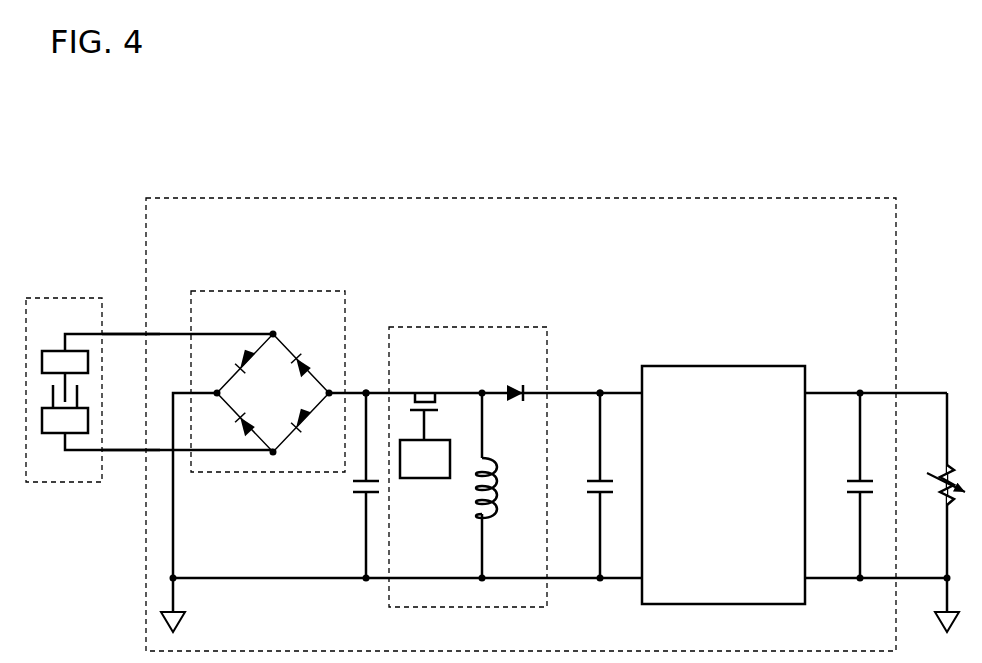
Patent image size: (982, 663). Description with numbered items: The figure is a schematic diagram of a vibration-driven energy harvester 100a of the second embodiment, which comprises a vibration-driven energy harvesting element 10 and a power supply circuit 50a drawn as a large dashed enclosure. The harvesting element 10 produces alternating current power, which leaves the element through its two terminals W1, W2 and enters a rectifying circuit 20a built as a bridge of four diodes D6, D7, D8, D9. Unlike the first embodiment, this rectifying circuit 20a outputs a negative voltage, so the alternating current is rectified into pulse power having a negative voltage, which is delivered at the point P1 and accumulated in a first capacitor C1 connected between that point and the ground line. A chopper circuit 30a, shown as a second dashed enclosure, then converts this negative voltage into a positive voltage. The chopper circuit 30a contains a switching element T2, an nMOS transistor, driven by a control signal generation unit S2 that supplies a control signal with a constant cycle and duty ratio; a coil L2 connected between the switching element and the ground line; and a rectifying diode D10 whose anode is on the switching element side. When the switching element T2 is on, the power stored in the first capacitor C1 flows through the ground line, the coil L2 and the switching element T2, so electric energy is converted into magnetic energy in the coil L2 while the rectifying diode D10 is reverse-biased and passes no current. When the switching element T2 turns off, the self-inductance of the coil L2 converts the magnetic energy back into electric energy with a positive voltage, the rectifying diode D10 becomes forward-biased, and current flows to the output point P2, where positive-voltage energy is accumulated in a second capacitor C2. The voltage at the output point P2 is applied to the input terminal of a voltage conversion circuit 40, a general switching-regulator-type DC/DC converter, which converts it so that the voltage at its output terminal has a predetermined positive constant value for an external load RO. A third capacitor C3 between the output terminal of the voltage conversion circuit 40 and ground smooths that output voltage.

The vibration-driven energy harvester 100a is at (328, 126).
The vibration-driven energy harvesting element 10 is at (60, 297).
The rectifying circuit 20a is at (268, 290).
The chopper circuit 30a is at (461, 326).
The voltage conversion circuit 40 is at (714, 365).
The power supply circuit 50a is at (536, 197).
The winding terminal W1 is at (131, 438).
The winding terminal W2 is at (131, 319).
The diode D6 is at (312, 438).
The diode D7 is at (316, 354).
The diode D8 is at (226, 432).
The diode D9 is at (226, 361).
The rectifying diode D10 is at (516, 375).
The node P1 is at (370, 374).
The output point P2 is at (602, 374).
The switching element T2 is at (424, 396).
The control signal generation unit S2 is at (425, 459).
The coil L2 is at (467, 485).
The first capacitor C1 is at (352, 485).
The second capacitor C2 is at (587, 485).
The third capacitor C3 is at (846, 485).
The external load RO is at (932, 494).